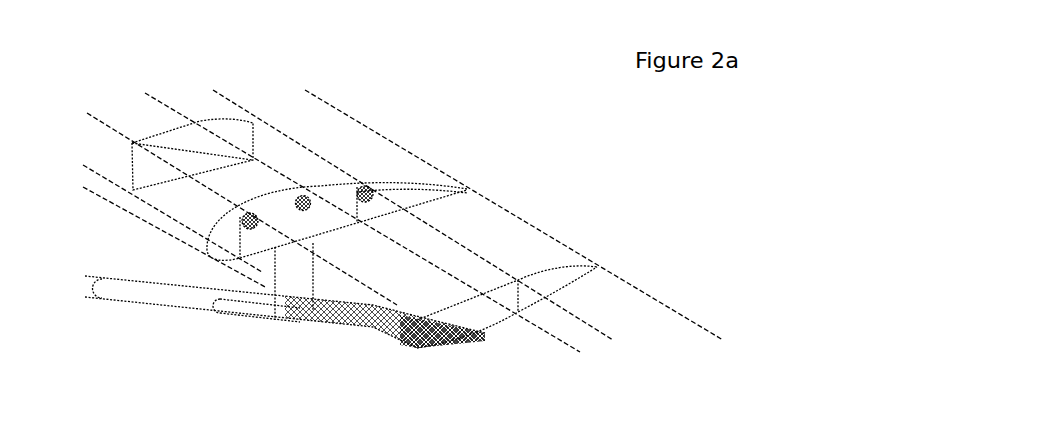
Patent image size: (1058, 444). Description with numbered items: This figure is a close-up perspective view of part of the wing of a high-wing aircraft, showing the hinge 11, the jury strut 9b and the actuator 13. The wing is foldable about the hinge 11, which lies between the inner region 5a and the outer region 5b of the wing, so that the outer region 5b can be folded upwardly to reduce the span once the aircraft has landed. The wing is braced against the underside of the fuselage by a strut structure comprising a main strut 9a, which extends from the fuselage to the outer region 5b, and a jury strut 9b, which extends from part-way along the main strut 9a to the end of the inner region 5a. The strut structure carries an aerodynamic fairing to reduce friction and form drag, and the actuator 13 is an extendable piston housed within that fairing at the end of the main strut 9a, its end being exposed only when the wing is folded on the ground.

The inner region of the wing 5a is at (275, 97).
The outer region of the wing 5b is at (634, 304).
The hinge 11 is at (334, 184).
The jury strut 9b is at (283, 260).
The main strut 9a is at (181, 311).
The actuator 13 is at (378, 336).